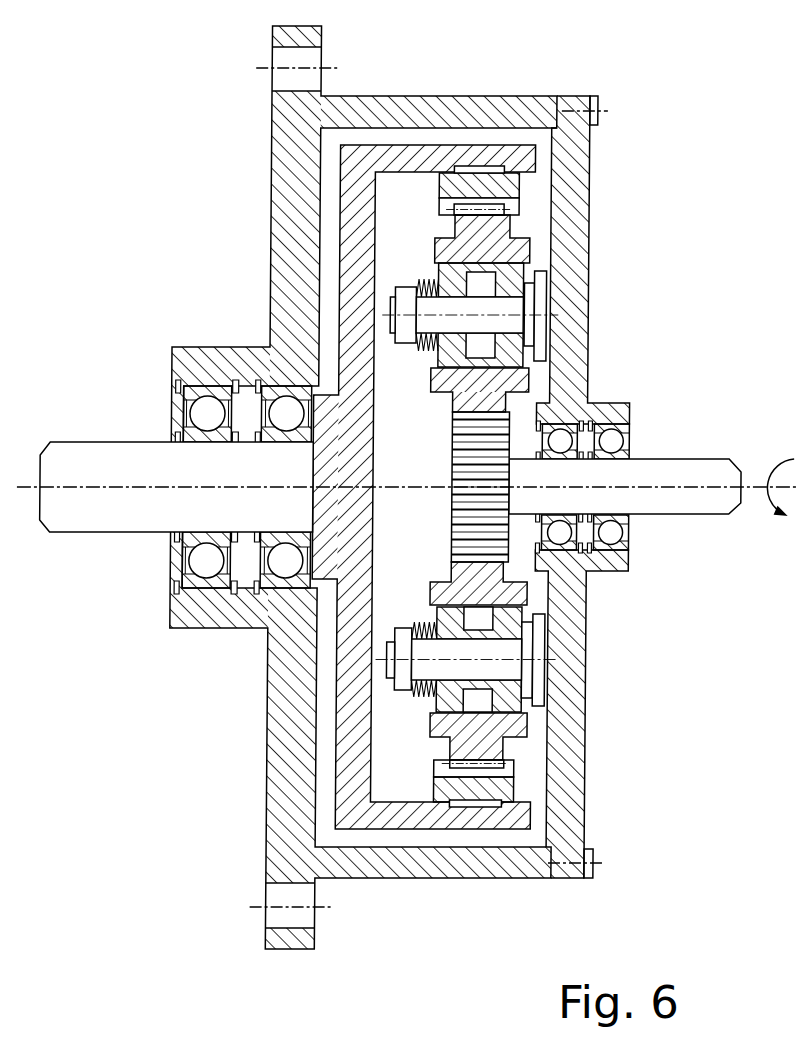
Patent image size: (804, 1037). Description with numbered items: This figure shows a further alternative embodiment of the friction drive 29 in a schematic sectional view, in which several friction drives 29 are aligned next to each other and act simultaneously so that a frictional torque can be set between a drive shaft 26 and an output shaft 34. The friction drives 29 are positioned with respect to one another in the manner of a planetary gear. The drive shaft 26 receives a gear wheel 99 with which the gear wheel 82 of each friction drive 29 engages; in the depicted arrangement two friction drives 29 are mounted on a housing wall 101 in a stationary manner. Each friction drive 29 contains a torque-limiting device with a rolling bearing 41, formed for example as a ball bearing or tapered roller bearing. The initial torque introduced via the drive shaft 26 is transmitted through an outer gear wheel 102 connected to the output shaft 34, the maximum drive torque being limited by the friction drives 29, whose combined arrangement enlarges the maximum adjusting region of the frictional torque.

The drive shaft 26 is at (686, 500).
The friction drive 29 is at (439, 487).
The output shaft 34 is at (120, 513).
The rolling bearing 41 is at (511, 283).
The gear wheel 82 is at (522, 252).
The gear wheel 99 is at (470, 464).
The housing wall 101 is at (569, 710).
The outer gear wheel 102 is at (503, 788).